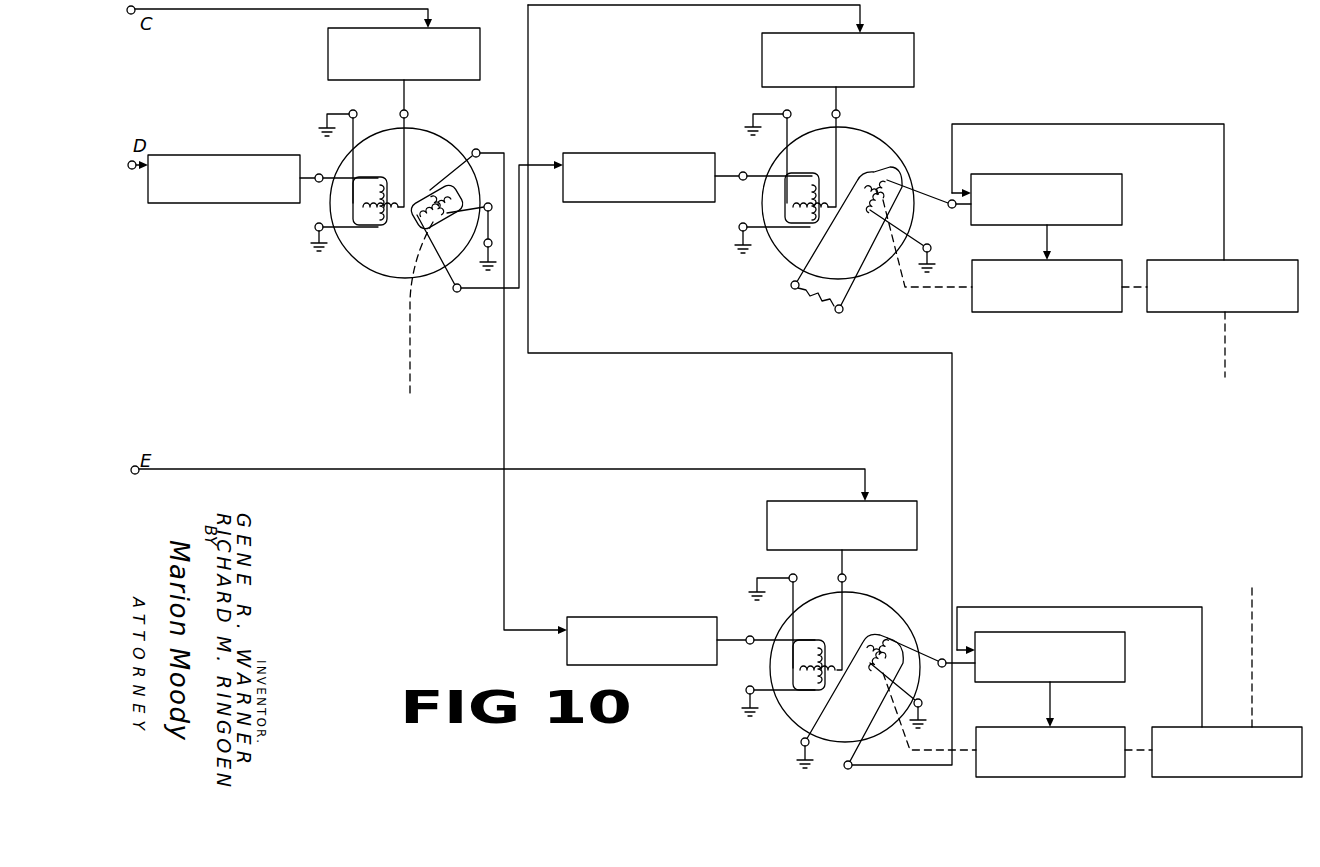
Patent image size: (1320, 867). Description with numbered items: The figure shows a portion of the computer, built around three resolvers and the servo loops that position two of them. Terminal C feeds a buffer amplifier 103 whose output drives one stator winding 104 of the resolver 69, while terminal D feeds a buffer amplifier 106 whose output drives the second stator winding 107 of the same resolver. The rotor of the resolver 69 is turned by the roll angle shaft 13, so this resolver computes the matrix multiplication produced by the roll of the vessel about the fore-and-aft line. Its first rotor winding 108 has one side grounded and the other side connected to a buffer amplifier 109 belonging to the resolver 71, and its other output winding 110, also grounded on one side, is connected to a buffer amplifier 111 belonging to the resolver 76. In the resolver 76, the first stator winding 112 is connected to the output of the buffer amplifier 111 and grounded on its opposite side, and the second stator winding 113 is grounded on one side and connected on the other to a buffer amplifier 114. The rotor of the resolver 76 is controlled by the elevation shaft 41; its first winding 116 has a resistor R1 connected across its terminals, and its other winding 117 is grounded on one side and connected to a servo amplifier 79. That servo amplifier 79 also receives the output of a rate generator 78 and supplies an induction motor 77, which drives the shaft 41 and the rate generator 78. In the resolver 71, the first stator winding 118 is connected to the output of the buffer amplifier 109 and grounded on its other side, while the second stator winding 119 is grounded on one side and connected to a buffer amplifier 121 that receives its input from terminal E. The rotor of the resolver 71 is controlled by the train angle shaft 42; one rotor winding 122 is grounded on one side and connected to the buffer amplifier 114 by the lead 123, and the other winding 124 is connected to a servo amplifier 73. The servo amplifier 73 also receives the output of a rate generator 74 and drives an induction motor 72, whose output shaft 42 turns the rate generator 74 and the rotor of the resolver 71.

The buffer amplifier 103 is at (329, 39).
The buffer amplifier 106 is at (228, 146).
The stator winding 104 is at (360, 205).
The second stator winding 107 is at (380, 230).
The first winding 108 is at (428, 192).
The second stator winding 110 is at (417, 216).
The resolver 69 is at (284, 298).
The roll angle shaft 13 is at (407, 365).
The buffer amplifier 111 is at (640, 147).
The buffer amplifier 114 is at (780, 40).
The first stator winding 112 is at (800, 228).
The second stator winding 113 is at (792, 202).
The first winding 116 is at (865, 181).
The winding 117 is at (875, 182).
The sixth resolver 76 is at (952, 93).
The resistor R1 is at (810, 310).
The servo amplifier 79 is at (1099, 181).
The induction motor 77 is at (1092, 268).
The rate generator 78 is at (1262, 271).
The shaft 41 is at (928, 290).
The lead 123 is at (953, 440).
The buffer amplifier 121 is at (767, 508).
The buffer amplifier 109 is at (663, 618).
The fifth resolver 71 is at (675, 562).
The first stator winding 118 is at (787, 662).
The second stator winding 119 is at (800, 681).
The rotor winding 122 is at (870, 645).
The winding 124 is at (883, 640).
The servo amplifier 73 is at (1112, 640).
The induction motor 72 is at (1005, 734).
The rate generator 74 is at (1288, 736).
The shaft 42 is at (908, 748).